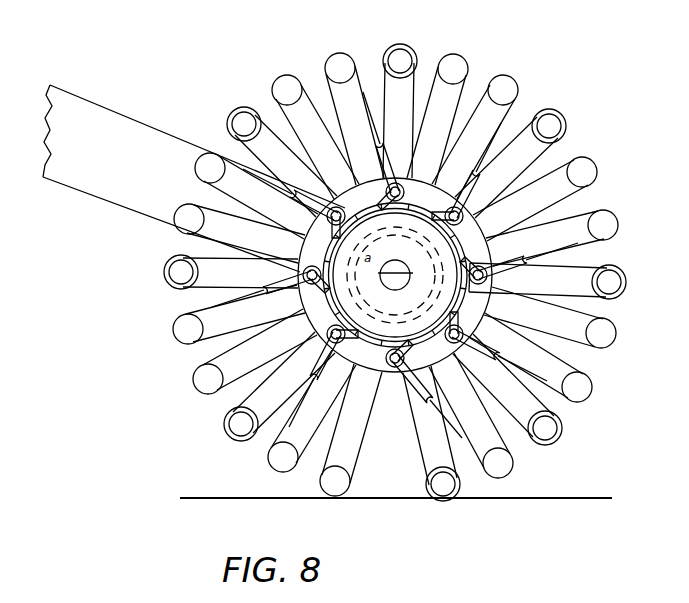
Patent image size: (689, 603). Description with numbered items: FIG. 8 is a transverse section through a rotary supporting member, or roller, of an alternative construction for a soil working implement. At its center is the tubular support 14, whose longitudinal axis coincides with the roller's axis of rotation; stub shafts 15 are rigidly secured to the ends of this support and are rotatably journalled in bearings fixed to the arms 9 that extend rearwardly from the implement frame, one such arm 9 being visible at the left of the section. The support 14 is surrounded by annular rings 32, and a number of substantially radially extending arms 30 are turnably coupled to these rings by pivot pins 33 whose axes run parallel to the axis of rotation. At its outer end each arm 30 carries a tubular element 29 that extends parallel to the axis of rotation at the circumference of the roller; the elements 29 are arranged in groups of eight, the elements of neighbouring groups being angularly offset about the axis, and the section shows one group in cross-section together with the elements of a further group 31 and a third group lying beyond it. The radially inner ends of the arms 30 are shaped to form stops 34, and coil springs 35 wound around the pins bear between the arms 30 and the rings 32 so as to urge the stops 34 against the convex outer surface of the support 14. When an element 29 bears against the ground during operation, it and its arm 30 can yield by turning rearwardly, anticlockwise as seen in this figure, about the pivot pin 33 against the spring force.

The arm 9 is at (102, 118).
The tubular support 14 is at (306, 250).
The stub shaft 15 is at (409, 276).
The tubular element 29 is at (401, 44).
The arm 30 is at (502, 140).
The group of elements 31 is at (484, 42).
The annular ring 32 is at (377, 340).
The pivot pin 33 is at (476, 298).
The stop 34 is at (435, 362).
The coil spring 35 is at (527, 260).